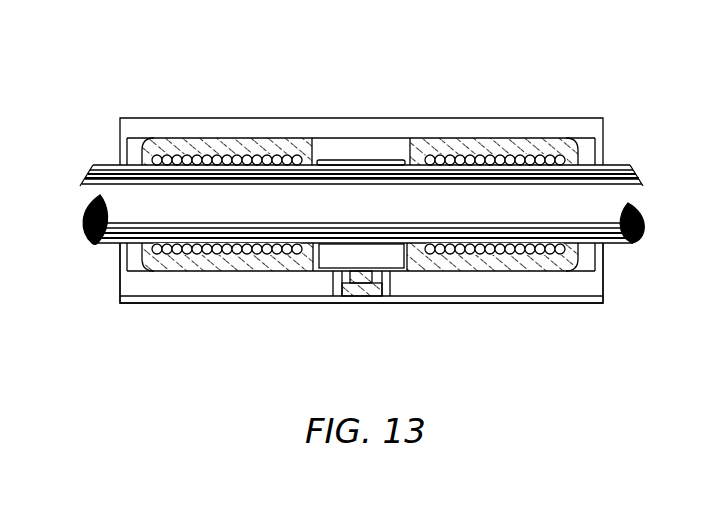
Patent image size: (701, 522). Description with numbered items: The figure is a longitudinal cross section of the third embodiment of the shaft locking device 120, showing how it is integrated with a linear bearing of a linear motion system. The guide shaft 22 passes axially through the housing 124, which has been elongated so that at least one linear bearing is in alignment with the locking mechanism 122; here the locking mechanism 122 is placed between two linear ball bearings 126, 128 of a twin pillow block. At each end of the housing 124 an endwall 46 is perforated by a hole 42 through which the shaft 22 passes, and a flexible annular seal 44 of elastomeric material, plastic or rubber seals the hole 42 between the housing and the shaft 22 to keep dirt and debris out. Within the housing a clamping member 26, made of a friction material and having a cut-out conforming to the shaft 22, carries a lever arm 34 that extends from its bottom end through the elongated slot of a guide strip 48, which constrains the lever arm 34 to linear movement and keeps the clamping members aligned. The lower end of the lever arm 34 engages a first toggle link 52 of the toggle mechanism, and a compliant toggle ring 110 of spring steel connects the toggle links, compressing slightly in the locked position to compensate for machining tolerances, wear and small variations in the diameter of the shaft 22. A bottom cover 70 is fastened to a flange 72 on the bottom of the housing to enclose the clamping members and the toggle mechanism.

The guide shaft 22 is at (125, 203).
The clamping member 26 is at (372, 258).
The lever arm 34 is at (372, 274).
The hole 42 is at (120, 272).
The flexible annular seal 44 is at (123, 152).
The endwall 46 is at (120, 288).
The guide strip 48 is at (333, 282).
The first toggle link 52 is at (345, 275).
The bottom cover 70 is at (150, 300).
The flange 72 is at (187, 285).
The compliant toggle ring 110 is at (358, 290).
The shaft locking device 120 is at (116, 111).
The locking mechanism 122 is at (343, 155).
The housing 124 is at (243, 118).
The linear ball bearing 126 is at (265, 150).
The linear ball bearing 128 is at (537, 153).